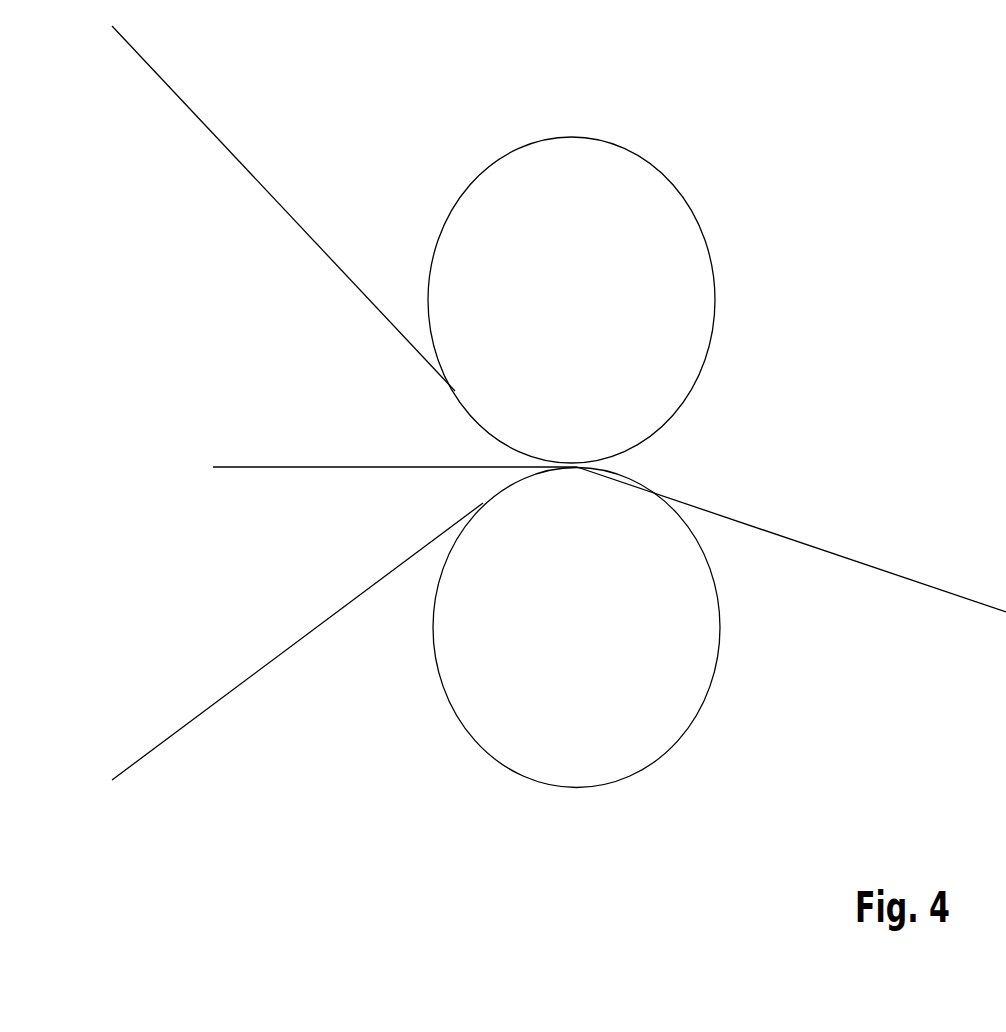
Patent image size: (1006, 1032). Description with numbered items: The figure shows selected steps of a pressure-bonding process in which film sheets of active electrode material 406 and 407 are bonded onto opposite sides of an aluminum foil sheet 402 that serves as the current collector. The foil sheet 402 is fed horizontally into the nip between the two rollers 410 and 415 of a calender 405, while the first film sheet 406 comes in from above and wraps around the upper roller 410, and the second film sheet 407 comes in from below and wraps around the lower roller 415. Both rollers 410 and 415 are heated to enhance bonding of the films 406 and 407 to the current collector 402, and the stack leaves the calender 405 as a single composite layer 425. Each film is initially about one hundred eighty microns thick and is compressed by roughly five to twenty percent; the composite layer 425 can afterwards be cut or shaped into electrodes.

The aluminum foil sheet 402 is at (307, 467).
The calender 405 is at (782, 233).
The film sheet of active electrode material 406 is at (173, 90).
The film sheet of active electrode material 407 is at (200, 713).
The roller 410 is at (571, 300).
The roller 415 is at (576, 628).
The composite layer 425 is at (850, 557).